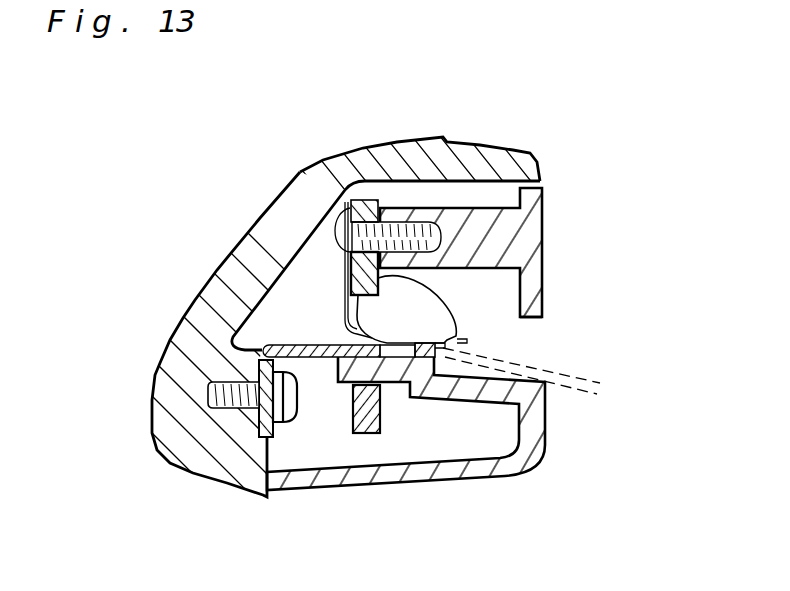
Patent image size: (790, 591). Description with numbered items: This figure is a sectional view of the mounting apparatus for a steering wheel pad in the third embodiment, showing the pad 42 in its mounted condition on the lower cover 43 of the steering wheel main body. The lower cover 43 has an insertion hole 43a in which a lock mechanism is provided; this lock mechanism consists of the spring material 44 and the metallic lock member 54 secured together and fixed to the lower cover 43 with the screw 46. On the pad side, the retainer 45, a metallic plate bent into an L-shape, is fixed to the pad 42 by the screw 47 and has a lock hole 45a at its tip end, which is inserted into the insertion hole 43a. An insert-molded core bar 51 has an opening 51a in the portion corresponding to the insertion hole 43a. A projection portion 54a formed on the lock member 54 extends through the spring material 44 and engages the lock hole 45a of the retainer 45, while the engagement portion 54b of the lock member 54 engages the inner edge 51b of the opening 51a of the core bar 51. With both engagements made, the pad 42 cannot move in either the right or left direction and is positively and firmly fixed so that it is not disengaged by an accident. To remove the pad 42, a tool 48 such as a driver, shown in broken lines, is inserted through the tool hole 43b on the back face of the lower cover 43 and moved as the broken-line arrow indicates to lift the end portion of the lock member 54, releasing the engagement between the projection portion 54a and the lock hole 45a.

The pad 42 is at (178, 372).
The lower cover 43 is at (533, 237).
The insertion hole 43a is at (363, 349).
The tool hole 43b is at (530, 335).
The spring material 44 is at (343, 295).
The retainer 45 is at (335, 346).
The lock hole 45a is at (413, 352).
The screw 46 is at (303, 168).
The screw 47 is at (208, 398).
The tool 48 is at (578, 388).
The core bar 51 is at (363, 207).
The opening 51a is at (392, 355).
The inner edge 51b is at (368, 280).
The lock member 54 is at (322, 285).
The projection portion 54a is at (412, 350).
The engagement portion 54b is at (410, 295).